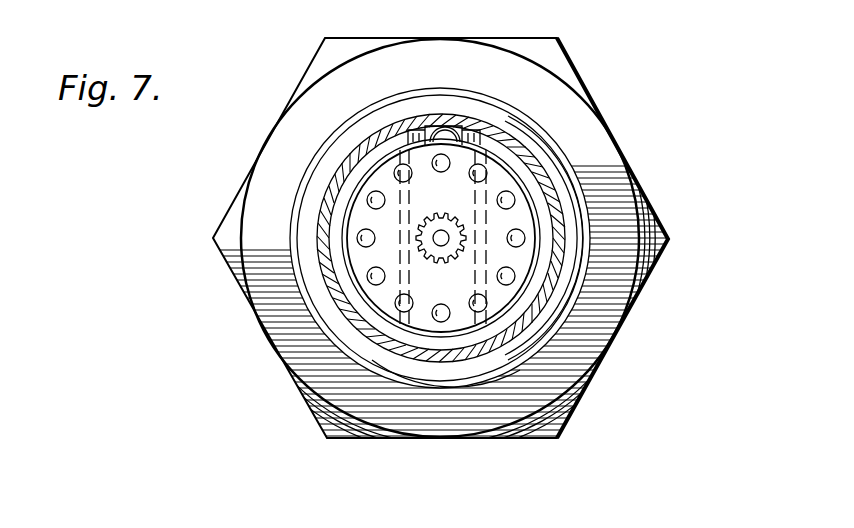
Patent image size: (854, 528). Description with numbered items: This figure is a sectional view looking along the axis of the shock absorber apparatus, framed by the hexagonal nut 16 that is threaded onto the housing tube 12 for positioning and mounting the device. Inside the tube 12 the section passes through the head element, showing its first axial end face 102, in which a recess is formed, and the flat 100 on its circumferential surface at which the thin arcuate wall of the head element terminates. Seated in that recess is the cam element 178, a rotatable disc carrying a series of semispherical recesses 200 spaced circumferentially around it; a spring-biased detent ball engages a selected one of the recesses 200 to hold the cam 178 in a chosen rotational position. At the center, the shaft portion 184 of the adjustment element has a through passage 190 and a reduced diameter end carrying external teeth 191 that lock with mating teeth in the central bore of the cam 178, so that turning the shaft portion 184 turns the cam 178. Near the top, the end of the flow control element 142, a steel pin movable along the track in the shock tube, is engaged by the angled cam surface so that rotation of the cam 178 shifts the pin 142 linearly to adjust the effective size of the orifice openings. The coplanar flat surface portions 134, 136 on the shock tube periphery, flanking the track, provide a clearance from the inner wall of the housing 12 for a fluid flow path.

The hexagonal nut 16 is at (440, 245).
The tube 12 is at (447, 238).
The first axial end face 102 is at (490, 241).
The flat 100 is at (479, 217).
The cam element 178 is at (531, 238).
The recesses 200 is at (570, 331).
The external teeth 191 is at (349, 256).
The shaft portion 184 is at (326, 272).
The through passage 190 is at (562, 280).
The flow control element 142 is at (458, 77).
The flat surface portion 134 is at (380, 77).
The flat surface portion 136 is at (515, 77).